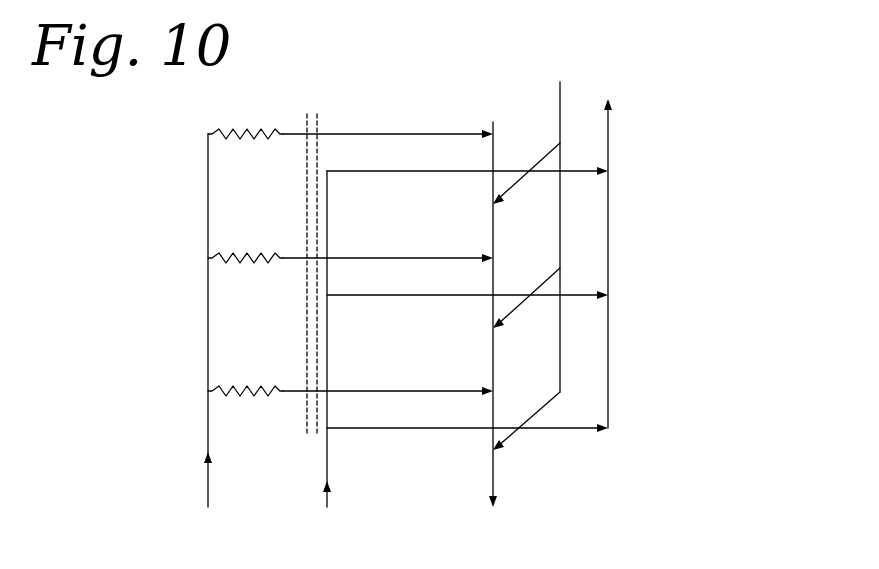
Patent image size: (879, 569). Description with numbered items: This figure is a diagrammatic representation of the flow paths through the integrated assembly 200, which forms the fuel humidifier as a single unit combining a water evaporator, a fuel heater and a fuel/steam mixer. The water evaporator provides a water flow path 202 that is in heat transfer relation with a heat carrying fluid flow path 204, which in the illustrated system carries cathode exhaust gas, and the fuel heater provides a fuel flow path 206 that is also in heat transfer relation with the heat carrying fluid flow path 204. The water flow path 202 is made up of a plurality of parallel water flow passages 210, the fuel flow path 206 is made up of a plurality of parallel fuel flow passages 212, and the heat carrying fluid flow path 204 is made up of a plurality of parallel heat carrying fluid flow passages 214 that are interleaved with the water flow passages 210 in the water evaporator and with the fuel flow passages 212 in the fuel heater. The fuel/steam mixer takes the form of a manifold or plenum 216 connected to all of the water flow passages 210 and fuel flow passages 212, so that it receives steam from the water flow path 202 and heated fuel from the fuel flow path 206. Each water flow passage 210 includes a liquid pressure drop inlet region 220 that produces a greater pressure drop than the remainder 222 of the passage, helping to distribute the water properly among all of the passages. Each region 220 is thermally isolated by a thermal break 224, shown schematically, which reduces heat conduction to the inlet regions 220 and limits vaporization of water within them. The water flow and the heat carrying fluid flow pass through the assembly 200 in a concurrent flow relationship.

The integrated assembly 200 is at (652, 252).
The water flow path 202 is at (208, 412).
The heat carrying fluid flow path 204 is at (327, 470).
The fuel flow path 206 is at (561, 99).
The water flow passages 210 is at (410, 133).
The fuel flow passages 212 is at (540, 160).
The heat carrying fluid flow passages 214 is at (380, 175).
The manifold or plenum 216 is at (493, 470).
The liquid pressure drop inlet region 220 is at (283, 126).
The remainder of the water flow passage 222 is at (339, 133).
The thermal break 224 is at (318, 115).